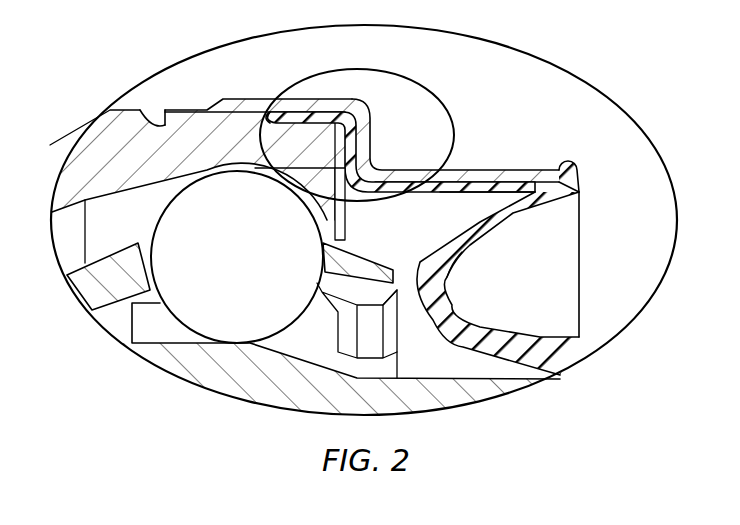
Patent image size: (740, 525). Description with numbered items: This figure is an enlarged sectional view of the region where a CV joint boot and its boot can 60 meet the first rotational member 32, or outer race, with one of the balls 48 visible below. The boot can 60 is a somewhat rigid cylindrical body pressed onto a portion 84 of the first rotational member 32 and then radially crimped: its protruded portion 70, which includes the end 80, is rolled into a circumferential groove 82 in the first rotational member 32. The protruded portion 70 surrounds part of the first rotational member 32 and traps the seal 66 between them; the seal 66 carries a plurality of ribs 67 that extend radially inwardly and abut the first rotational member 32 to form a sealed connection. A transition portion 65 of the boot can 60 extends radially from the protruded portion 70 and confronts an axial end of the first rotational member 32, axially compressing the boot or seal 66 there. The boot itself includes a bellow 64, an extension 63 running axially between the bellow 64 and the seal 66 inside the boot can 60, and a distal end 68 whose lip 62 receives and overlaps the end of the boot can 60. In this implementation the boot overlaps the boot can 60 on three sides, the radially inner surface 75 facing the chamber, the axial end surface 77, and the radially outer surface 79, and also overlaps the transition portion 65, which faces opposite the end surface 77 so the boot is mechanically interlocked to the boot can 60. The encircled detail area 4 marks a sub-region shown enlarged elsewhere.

The detail region 4 is at (355, 69).
The first rotational member 32 is at (135, 147).
The balls 48 is at (248, 265).
The boot can 60 is at (458, 177).
The lip 62 is at (563, 162).
The extension 63 is at (422, 188).
The bellow 64 is at (447, 277).
The transition portion 65 is at (364, 137).
The seal 66 is at (283, 117).
The ribs 67 is at (307, 127).
The distal end 68 is at (573, 187).
The protruded portion 70 is at (238, 99).
The radially inner surface 75 is at (452, 193).
The axial end surface 77 is at (574, 163).
The radially outer surface 79 is at (513, 170).
The end 80 is at (167, 110).
The groove 82 is at (152, 118).
The portion 84 is at (250, 110).